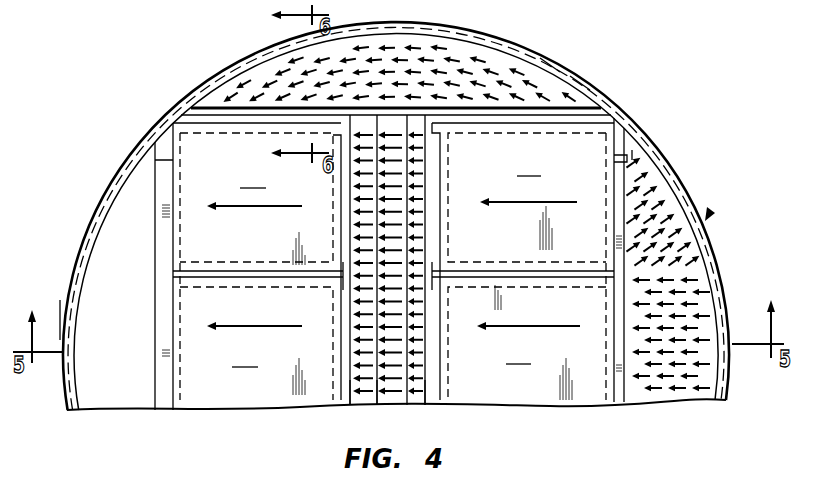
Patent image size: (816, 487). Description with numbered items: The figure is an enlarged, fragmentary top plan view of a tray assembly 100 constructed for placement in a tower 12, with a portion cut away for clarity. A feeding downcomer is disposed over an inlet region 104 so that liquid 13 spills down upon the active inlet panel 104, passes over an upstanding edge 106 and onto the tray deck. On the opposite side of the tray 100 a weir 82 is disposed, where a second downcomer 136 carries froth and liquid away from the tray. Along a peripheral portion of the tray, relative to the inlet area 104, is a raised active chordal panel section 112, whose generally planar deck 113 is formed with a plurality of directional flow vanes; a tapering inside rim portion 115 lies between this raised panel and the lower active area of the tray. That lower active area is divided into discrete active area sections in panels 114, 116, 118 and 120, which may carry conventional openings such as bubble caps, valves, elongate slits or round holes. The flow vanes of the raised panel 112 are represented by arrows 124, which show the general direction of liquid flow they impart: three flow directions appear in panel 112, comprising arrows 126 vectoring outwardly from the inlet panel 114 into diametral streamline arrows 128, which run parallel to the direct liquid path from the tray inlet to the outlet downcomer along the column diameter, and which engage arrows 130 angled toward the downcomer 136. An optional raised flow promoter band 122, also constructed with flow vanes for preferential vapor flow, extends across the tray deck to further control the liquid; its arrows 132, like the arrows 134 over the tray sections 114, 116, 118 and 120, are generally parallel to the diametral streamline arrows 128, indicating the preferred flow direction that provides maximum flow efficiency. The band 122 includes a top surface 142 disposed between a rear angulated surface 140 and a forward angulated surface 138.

The tower 12 is at (116, 177).
The liquid 13 is at (709, 212).
The weir 82 is at (157, 316).
The tray assembly 100 is at (684, 268).
The inlet region 104 is at (697, 292).
The upstanding edge 106 is at (624, 395).
The raised active chordal panel section 112 is at (506, 75).
The planar deck 113 is at (470, 60).
The active area panel 114 is at (523, 261).
The tapering inside rim portion 115 is at (585, 104).
The active area panel 116 is at (257, 261).
The active area panel 118 is at (527, 342).
The active area panel 120 is at (256, 343).
The raised flow promoter band 122 is at (404, 153).
The arrows 124 is at (574, 80).
The arrows 126 is at (548, 70).
The diametral streamline arrows 128 is at (410, 52).
The arrows 130 is at (262, 78).
The arrows 132 is at (400, 387).
The arrows 134 is at (250, 206).
The downcomer 136 is at (107, 252).
The forward angulated surface 138 is at (424, 402).
The rear angulated surface 140 is at (364, 402).
The top surface 142 is at (388, 401).